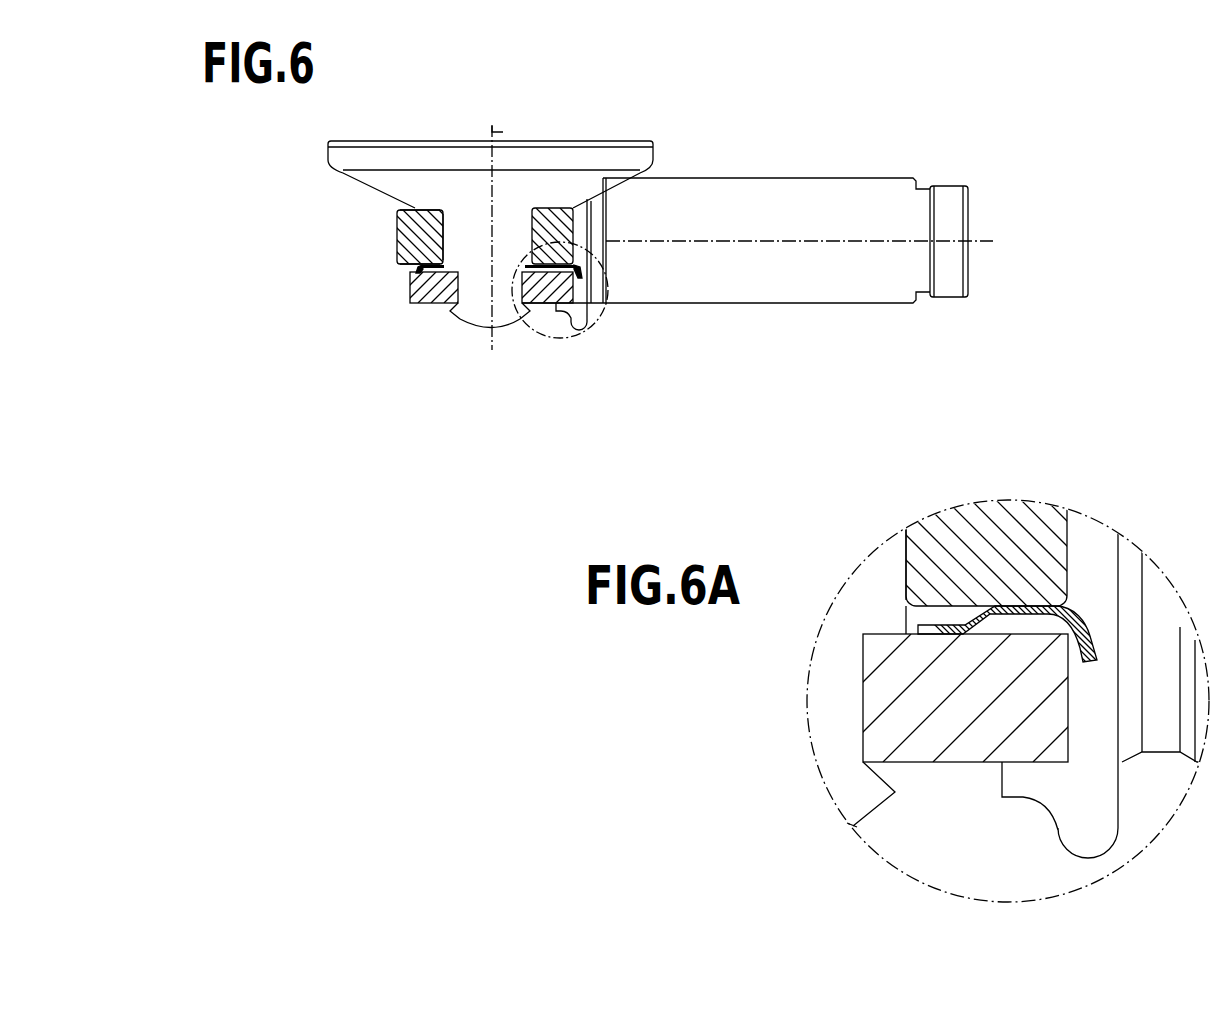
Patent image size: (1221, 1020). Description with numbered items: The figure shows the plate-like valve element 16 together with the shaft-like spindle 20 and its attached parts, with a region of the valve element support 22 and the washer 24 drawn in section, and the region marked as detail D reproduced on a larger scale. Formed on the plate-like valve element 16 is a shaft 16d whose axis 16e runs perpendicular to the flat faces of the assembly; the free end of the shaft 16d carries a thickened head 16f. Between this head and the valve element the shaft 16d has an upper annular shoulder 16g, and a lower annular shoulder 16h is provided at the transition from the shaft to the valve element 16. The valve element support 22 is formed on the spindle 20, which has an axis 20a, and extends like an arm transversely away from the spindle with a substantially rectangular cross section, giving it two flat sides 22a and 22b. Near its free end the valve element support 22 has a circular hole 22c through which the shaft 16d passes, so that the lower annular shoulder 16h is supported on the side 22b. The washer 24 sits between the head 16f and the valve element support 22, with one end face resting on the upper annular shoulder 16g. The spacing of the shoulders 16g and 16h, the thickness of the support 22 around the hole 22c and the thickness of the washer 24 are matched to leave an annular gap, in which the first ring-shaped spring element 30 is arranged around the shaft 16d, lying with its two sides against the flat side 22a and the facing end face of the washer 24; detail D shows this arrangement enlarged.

In FIG. 6, the plate-like valve element 16 is at (593, 158).
In FIG. 6, the shaft 16d is at (475, 324).
In FIG. 6A, the shaft 16d is at (835, 662).
In FIG. 6, the axis 16e is at (494, 132).
In FIG. 6, the thickened head 16f is at (512, 313).
In FIG. 6A, the thickened head 16f is at (858, 792).
In FIG. 6, the upper annular shoulder 16g is at (440, 305).
In FIG. 6A, the upper annular shoulder 16g is at (870, 654).
In FIG. 6, the lower annular shoulder 16h is at (415, 207).
In FIG. 6, the shaft-like spindle 20 is at (729, 311).
In FIG. 6, the axis 20a is at (780, 241).
In FIG. 6, the valve element support 22 is at (405, 232).
In FIG. 6A, the valve element support 22 is at (1005, 540).
In FIG. 6, the flat side 22a is at (408, 275).
In FIG. 6, the flat side 22b is at (410, 207).
In FIG. 6, the hole 22c is at (454, 222).
In FIG. 6A, the hole 22c is at (896, 546).
In FIG. 6, the washer 24 is at (408, 305).
In FIG. 6, the first ring-shaped spring element 30 is at (598, 266).
In FIG. 6A, the first ring-shaped spring element 30 is at (945, 608).
In FIG. 6, the detail D is at (566, 338).